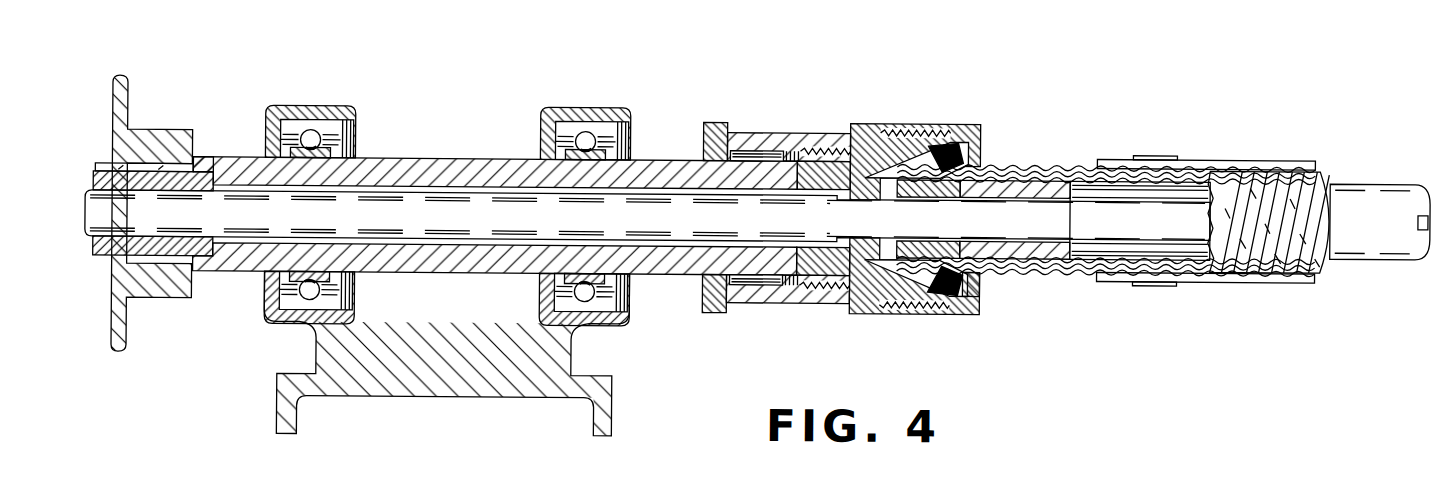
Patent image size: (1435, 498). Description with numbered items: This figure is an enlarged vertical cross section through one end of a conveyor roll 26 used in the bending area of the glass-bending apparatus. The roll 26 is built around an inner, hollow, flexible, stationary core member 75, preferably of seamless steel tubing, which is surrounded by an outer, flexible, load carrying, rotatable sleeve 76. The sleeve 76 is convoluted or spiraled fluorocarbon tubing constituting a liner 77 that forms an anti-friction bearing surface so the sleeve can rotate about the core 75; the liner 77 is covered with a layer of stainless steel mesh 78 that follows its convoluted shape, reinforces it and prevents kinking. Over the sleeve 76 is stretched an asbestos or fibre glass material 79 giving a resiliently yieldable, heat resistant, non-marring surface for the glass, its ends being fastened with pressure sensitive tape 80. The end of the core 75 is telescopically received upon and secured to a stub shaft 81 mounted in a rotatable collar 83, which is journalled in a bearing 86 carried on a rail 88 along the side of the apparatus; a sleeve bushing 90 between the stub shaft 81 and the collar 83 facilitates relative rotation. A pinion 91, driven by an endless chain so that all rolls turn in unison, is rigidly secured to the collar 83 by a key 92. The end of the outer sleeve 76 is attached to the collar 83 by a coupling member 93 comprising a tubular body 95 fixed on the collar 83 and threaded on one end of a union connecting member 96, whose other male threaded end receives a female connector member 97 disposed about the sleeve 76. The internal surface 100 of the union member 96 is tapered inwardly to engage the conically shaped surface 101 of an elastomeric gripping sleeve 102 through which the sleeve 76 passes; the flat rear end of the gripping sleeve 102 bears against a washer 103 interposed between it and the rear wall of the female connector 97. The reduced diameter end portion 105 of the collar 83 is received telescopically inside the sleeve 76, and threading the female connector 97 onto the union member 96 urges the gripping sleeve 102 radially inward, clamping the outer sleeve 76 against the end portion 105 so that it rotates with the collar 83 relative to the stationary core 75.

The conveyor roll 26 is at (1352, 296).
The core member 75 is at (1375, 180).
The sleeve 76 is at (1335, 161).
The liner 77 is at (1070, 168).
The stainless steel mesh 78 is at (1020, 156).
The asbestos or fibre glass material 79 is at (1190, 274).
The pressure sensitive tape 80 is at (1150, 154).
The stub shaft 81 is at (405, 201).
The collar 83 is at (496, 155).
The bearing 86 is at (310, 104).
The rail 88 is at (290, 373).
The sleeve bushing 90 is at (212, 182).
The pinion 91 is at (125, 105).
The key 92 is at (103, 170).
The coupling member 93 is at (902, 86).
The tubular body 95 is at (747, 126).
The union connecting member 96 is at (853, 119).
The female connector member 97 is at (913, 124).
The internal surface 100 is at (930, 276).
The conically shaped surface 101 is at (900, 274).
The gripping sleeve 102 is at (962, 133).
The washer 103 is at (963, 278).
The reduced diameter end portion 105 is at (918, 182).